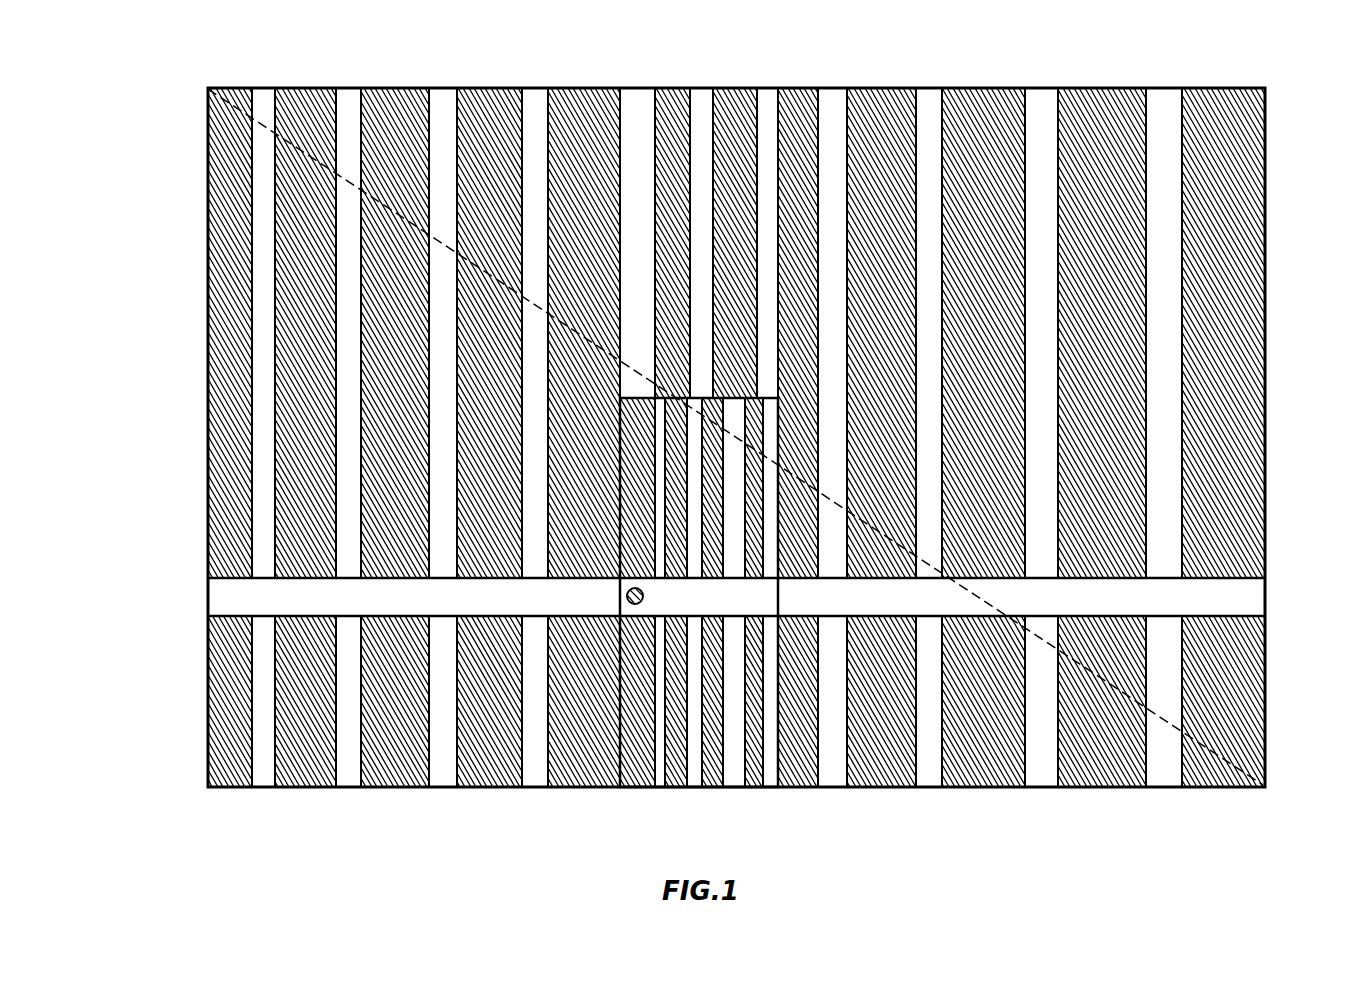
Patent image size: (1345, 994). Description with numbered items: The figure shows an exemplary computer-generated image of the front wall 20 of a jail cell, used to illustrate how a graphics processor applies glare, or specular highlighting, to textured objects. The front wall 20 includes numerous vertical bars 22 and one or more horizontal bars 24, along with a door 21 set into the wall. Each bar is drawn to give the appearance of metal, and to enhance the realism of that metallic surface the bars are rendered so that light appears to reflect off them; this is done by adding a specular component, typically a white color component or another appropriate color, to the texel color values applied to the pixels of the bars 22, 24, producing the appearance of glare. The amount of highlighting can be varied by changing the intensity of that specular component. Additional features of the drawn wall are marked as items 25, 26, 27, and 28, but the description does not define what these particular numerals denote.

The front wall 20 is at (296, 76).
The door 21 is at (699, 618).
The vertical bars 22 is at (236, 415).
The horizontal bars 24 is at (707, 584).
The hatched strip 25 is at (1094, 414).
The hatched strip 26 is at (292, 465).
The hatched strip 27 is at (571, 414).
The diagonal reference line 28 is at (767, 437).